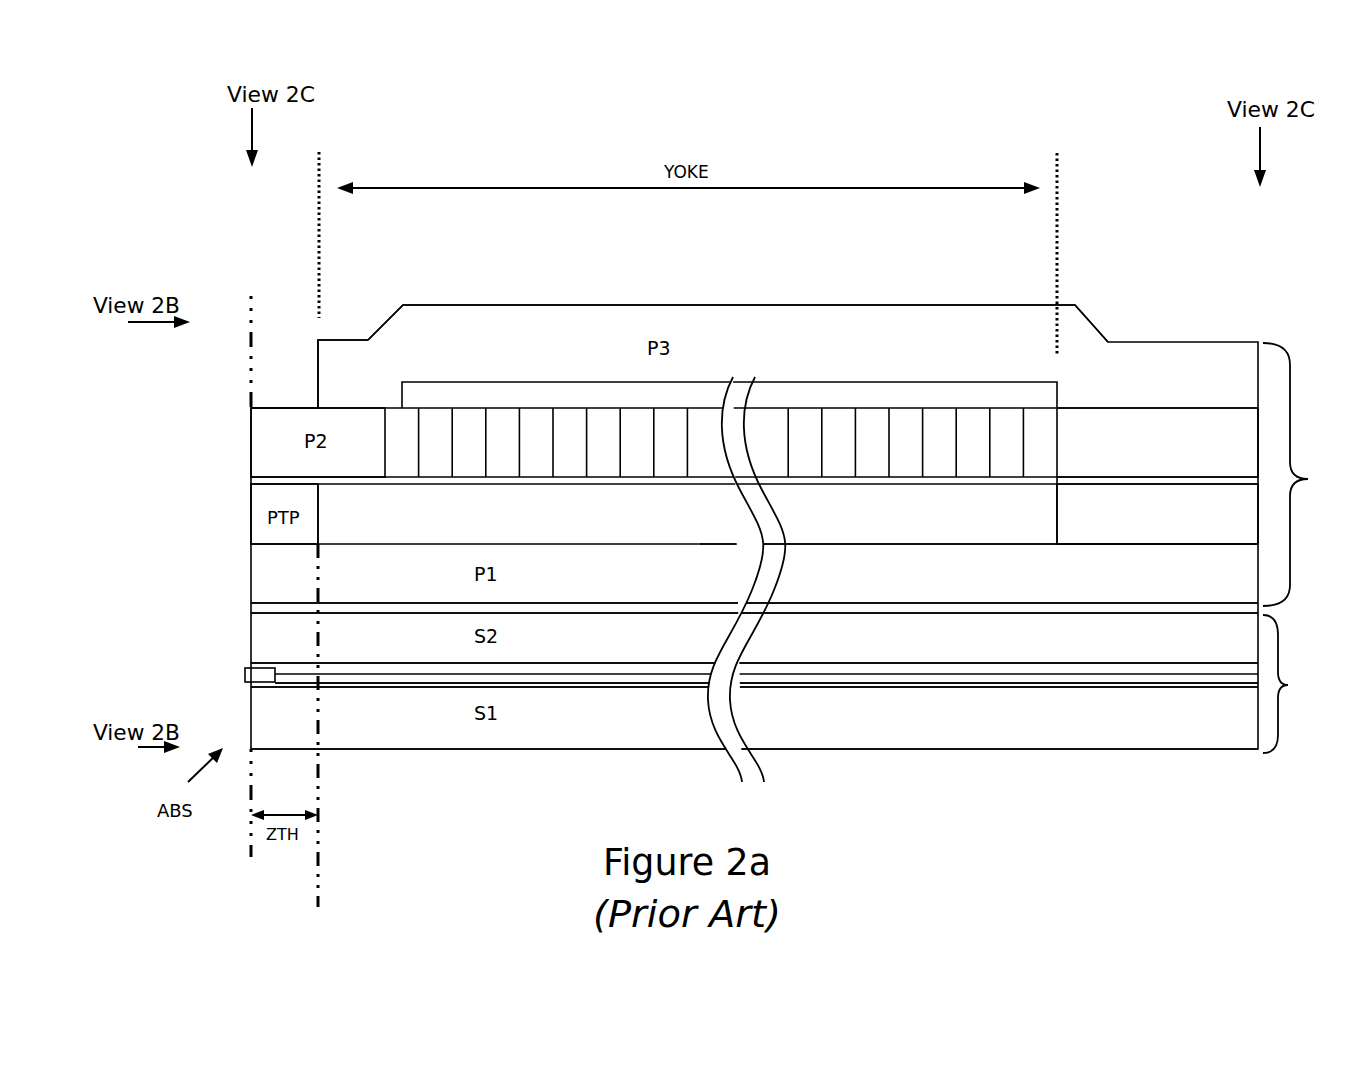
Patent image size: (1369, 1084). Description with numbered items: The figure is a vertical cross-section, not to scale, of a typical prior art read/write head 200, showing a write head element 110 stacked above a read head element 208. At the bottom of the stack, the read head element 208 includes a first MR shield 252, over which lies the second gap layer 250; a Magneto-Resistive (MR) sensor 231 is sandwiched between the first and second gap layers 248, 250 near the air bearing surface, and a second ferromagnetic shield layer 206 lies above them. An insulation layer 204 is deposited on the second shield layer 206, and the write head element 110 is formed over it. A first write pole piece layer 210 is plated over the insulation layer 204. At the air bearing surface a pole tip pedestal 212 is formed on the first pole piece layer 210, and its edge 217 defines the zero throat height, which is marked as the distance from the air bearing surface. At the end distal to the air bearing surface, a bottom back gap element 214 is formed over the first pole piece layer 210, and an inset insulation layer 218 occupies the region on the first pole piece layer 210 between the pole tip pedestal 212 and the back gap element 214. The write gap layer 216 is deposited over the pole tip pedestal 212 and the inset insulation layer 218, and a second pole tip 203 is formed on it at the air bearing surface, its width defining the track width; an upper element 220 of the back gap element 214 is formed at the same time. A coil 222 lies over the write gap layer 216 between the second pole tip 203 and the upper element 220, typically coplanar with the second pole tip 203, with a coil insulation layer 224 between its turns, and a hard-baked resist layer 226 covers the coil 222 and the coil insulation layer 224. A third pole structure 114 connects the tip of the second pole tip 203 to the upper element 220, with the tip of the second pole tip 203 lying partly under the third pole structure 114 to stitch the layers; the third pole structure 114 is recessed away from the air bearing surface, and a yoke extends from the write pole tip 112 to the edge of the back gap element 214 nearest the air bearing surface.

The write head element 110 is at (1307, 474).
The write pole tip 112 is at (318, 373).
The pole (P3) structure 114 is at (627, 305).
The read/write head 200 is at (1092, 809).
The second pole tip (P2) 203 is at (251, 445).
The insulation layer 204 is at (251, 609).
The second ferromagnetic shield layer (S2) 206 is at (251, 639).
The read head element 208 is at (1296, 684).
The first write pole piece (P1) layer 210 is at (251, 580).
The Pole Tip Pedestal (PTP) 212 is at (251, 521).
The bottom Back Gap (BG) element 214 is at (1157, 514).
The write gap layer 216 is at (251, 483).
The edge of PTP 217 is at (319, 516).
The inset insulation layer 218 is at (987, 537).
The upper element of BG element 220 is at (1157, 442).
The coil 222 is at (493, 425).
The coil insulation layer 224 is at (478, 425).
The hard-baked resist layer 226 is at (888, 382).
The Magneto-Resistive (MR) sensor 231 is at (251, 679).
The first gap layer 248 is at (437, 667).
The second gap layer 250 is at (572, 681).
The first MR shield S1 252 is at (251, 720).